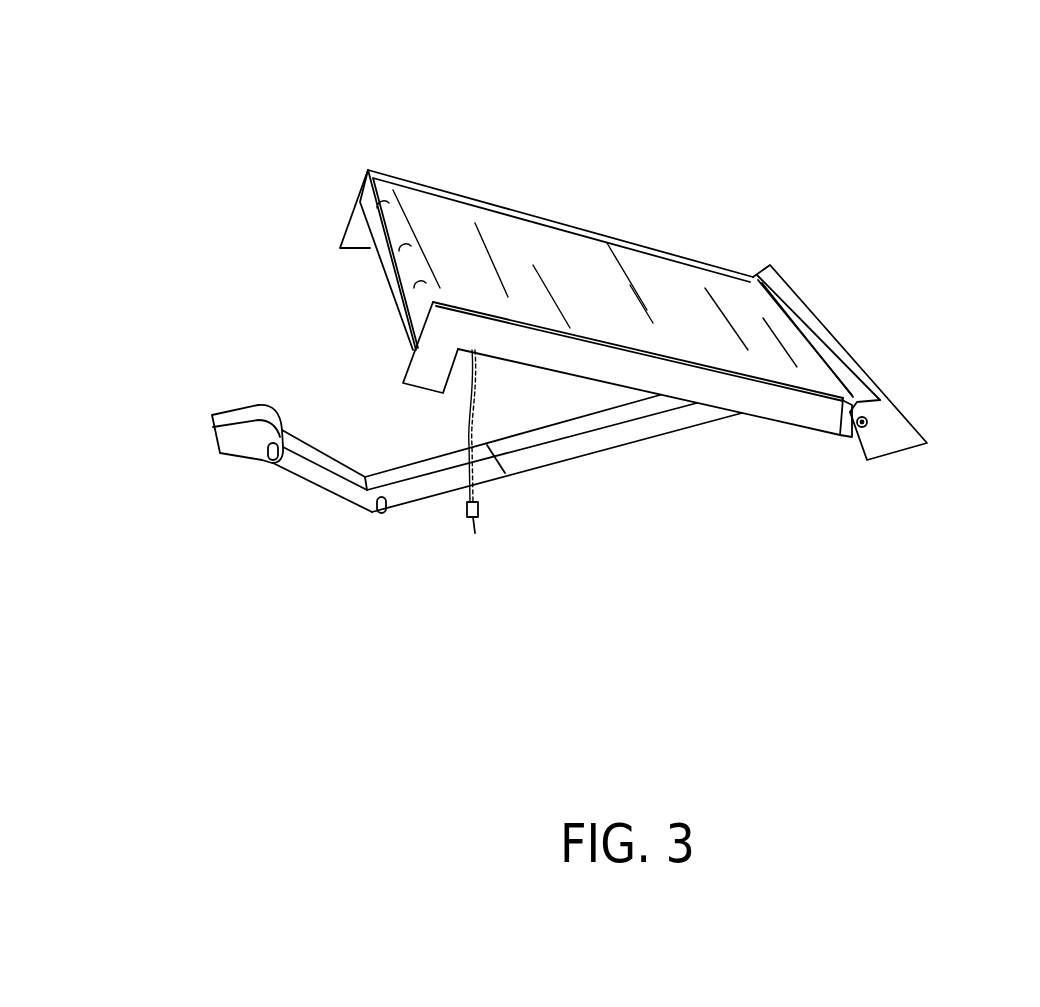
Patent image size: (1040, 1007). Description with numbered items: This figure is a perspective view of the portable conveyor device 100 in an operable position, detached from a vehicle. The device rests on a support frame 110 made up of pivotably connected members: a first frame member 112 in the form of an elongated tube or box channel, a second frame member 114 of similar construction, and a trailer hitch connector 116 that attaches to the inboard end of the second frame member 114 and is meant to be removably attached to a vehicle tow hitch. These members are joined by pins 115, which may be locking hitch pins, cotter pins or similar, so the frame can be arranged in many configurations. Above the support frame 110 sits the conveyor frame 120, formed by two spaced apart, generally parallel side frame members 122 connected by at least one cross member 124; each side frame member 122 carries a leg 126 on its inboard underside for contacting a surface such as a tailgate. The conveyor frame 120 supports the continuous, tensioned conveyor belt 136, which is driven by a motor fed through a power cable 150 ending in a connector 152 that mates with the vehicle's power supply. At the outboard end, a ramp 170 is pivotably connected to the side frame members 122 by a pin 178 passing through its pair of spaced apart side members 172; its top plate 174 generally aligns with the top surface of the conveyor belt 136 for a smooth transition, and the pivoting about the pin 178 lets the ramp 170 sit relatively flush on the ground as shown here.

The portable conveyor device 100 is at (786, 108).
The support frame 110 is at (553, 500).
The first frame member 112 is at (490, 492).
The second frame member 114 is at (330, 500).
The pin 115 is at (275, 470).
The trailer hitch connector 116 is at (234, 468).
The conveyor frame 120 is at (774, 432).
The side frame member 122 is at (473, 198).
The cross member 124 is at (382, 254).
The leg 126 is at (420, 372).
The conveyor belt 136 is at (602, 295).
The power cable 150 is at (465, 538).
The connector 152 is at (473, 527).
The ramp 170 is at (895, 396).
The side member 172 is at (895, 435).
The top plate 174 is at (840, 318).
The pin 178 is at (862, 428).